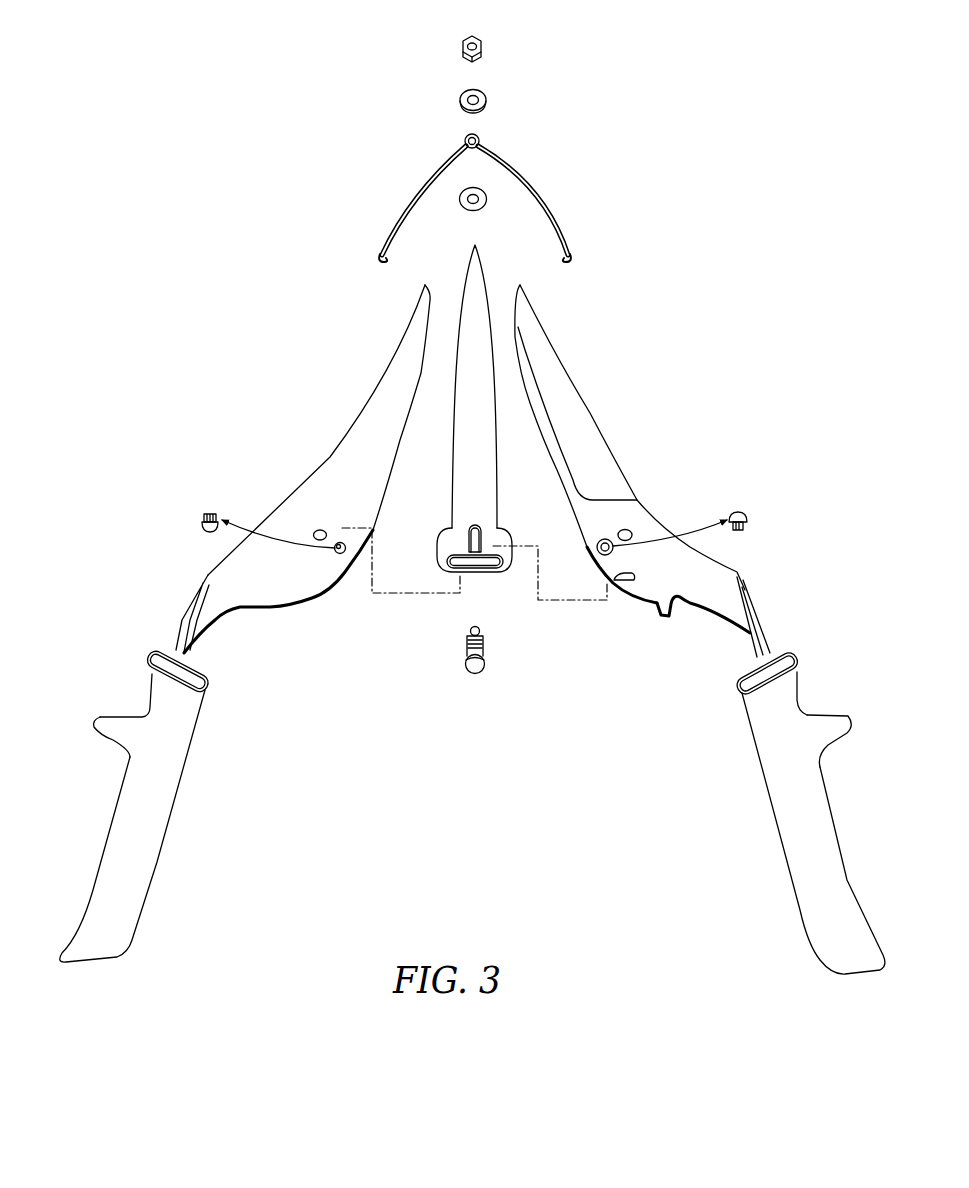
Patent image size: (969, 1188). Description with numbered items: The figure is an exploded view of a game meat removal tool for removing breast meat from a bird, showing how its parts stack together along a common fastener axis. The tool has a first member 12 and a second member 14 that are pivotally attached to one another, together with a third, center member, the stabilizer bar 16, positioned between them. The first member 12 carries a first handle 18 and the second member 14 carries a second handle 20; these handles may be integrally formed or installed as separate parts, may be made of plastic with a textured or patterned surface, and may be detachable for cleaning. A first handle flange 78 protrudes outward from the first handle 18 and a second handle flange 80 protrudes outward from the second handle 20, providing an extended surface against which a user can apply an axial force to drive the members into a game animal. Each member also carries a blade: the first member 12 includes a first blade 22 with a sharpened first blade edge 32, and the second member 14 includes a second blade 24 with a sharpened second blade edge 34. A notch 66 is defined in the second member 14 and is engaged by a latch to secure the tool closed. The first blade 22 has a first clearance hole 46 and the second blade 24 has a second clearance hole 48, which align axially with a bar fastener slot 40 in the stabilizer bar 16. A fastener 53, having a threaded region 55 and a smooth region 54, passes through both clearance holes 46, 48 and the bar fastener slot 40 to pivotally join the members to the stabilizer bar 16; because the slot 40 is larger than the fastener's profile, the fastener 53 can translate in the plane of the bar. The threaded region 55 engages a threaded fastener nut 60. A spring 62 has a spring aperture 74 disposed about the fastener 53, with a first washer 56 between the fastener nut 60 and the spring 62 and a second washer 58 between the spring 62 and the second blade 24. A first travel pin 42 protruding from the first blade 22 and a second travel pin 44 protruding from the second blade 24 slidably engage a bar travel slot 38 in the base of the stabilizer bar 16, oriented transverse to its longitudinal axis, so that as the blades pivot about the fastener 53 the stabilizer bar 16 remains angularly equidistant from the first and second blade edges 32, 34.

The first member 12 is at (245, 623).
The second member 14 is at (700, 629).
The stabilizer bar 16 is at (482, 440).
The first handle 18 is at (136, 805).
The second handle 20 is at (805, 812).
The first blade 22 is at (303, 469).
The second blade 24 is at (642, 491).
The first blade edge 32 is at (392, 342).
The second blade edge 34 is at (563, 360).
The bar travel slot 38 is at (478, 573).
The bar fastener slot 40 is at (477, 521).
The first travel pin 42 is at (204, 517).
The second travel pin 44 is at (740, 512).
The first clearance hole 46 is at (321, 522).
The second clearance hole 48 is at (633, 528).
The fastener 53 is at (471, 679).
The smooth region 54 is at (472, 663).
The threaded region 55 is at (470, 632).
The first washer 56 is at (485, 100).
The second washer 58 is at (465, 209).
The fastener nut 60 is at (482, 51).
The spring 62 is at (489, 185).
The notch 66 is at (676, 608).
The spring aperture 74 is at (482, 135).
The first handle flange 78 is at (101, 712).
The second handle flange 80 is at (847, 716).